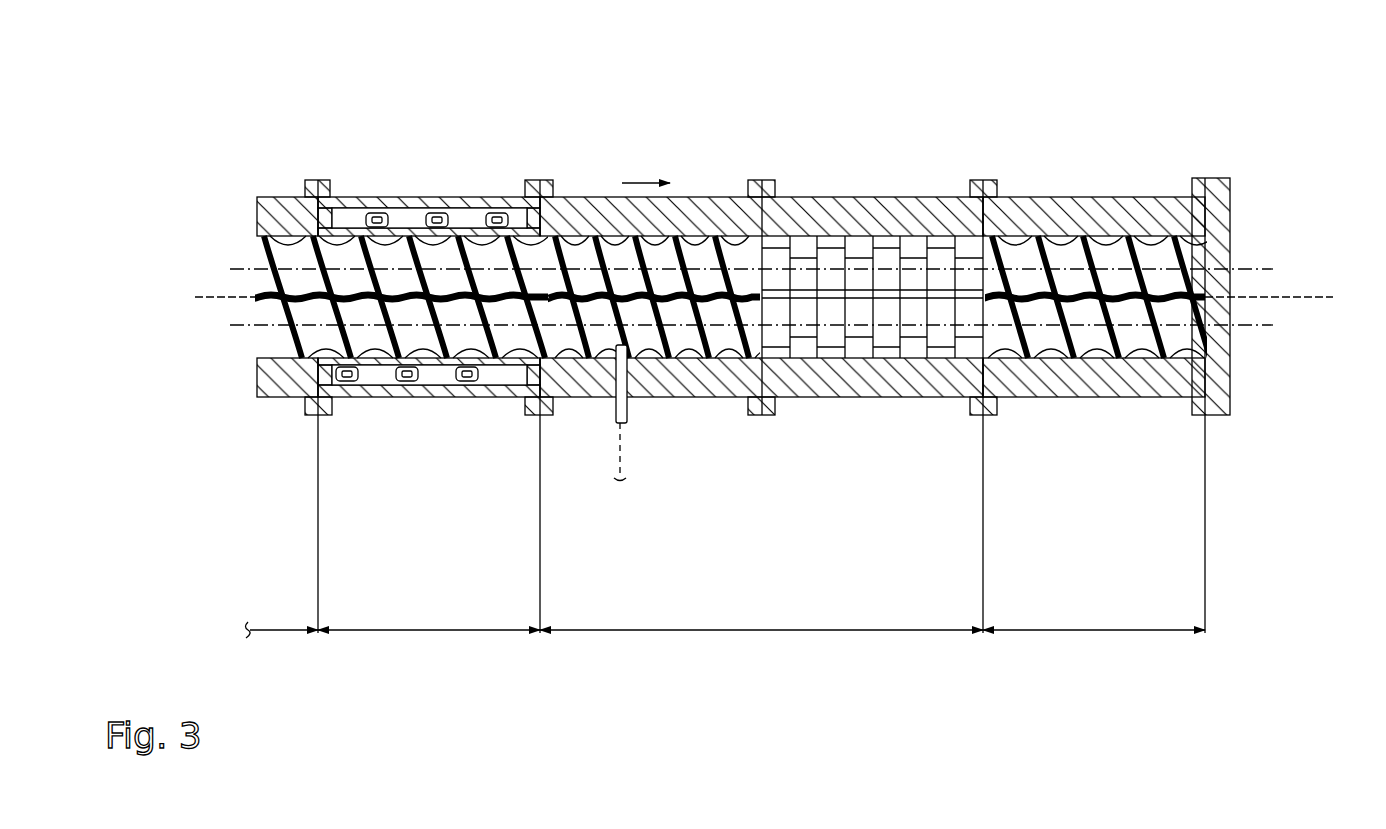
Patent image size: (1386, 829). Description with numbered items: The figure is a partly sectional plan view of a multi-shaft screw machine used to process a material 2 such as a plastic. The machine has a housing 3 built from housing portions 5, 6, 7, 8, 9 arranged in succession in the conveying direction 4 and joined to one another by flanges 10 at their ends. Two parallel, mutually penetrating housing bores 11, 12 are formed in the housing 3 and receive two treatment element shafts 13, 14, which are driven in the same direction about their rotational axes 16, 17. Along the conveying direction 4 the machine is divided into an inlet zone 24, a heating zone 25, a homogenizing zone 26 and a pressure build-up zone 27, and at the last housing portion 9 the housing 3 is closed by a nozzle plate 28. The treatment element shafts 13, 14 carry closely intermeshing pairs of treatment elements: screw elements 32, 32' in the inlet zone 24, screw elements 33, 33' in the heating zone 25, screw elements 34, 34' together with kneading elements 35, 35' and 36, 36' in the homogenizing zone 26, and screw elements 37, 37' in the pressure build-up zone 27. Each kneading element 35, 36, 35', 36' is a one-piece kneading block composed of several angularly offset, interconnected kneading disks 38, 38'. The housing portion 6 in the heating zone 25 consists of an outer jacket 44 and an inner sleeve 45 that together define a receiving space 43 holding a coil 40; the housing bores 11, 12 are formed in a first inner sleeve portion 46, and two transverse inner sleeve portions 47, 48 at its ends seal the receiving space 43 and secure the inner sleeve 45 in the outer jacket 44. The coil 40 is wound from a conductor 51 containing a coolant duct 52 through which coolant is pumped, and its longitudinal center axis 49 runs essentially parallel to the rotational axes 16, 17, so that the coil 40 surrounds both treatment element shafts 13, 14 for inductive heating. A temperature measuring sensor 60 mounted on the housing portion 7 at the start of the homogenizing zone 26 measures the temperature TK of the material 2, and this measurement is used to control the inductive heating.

The material to be processed 2 is at (258, 367).
The housing 3 is at (739, 183).
The conveying direction 4 is at (652, 183).
The housing portion 5 is at (280, 215).
The housing portion 6 is at (498, 184).
The housing portion 7 is at (607, 197).
The housing portion 8 is at (865, 393).
The housing portion 9 is at (1108, 393).
The flanges 10 is at (330, 196).
The housing bore 11 is at (1028, 362).
The housing bore 12 is at (1087, 242).
The treatment element shaft 13 is at (1088, 343).
The treatment element shaft 14 is at (1138, 255).
The rotational axis 16 is at (1257, 325).
The rotational axis 17 is at (1240, 269).
The inlet zone 24 is at (282, 526).
The heating zone 25 is at (429, 524).
The homogenizing zone 26 is at (761, 524).
The pressure build-up zone 27 is at (1094, 524).
The nozzle plate 28 is at (1222, 178).
The screw element 32 is at (226, 297).
The screw element 32' is at (200, 293).
The screw element 33 is at (342, 422).
The screw element 33' is at (367, 154).
The screw element 34 is at (678, 451).
The screw element 34' is at (722, 147).
The kneading element 35 is at (829, 447).
The kneading element 35' is at (883, 155).
The kneading element 36 is at (919, 447).
The kneading element 36' is at (979, 155).
The screw element 37 is at (1168, 429).
The screw element 37' is at (1215, 147).
The kneading disks 38 is at (872, 371).
The kneading disks 38' is at (838, 157).
The coil 40 is at (470, 380).
The receiving space 43 is at (463, 236).
The outer jacket 44 is at (405, 236).
The inner sleeve 45 is at (435, 337).
The first inner sleeve portion 46 is at (450, 343).
The inner sleeve portion 47 is at (307, 387).
The inner sleeve portion 48 is at (585, 390).
The longitudinal center axis 49 is at (222, 297).
The conductor 51 is at (437, 347).
The coolant duct 52 is at (403, 350).
The temperature measuring sensor 60 is at (628, 423).
The temperature TK is at (670, 360).